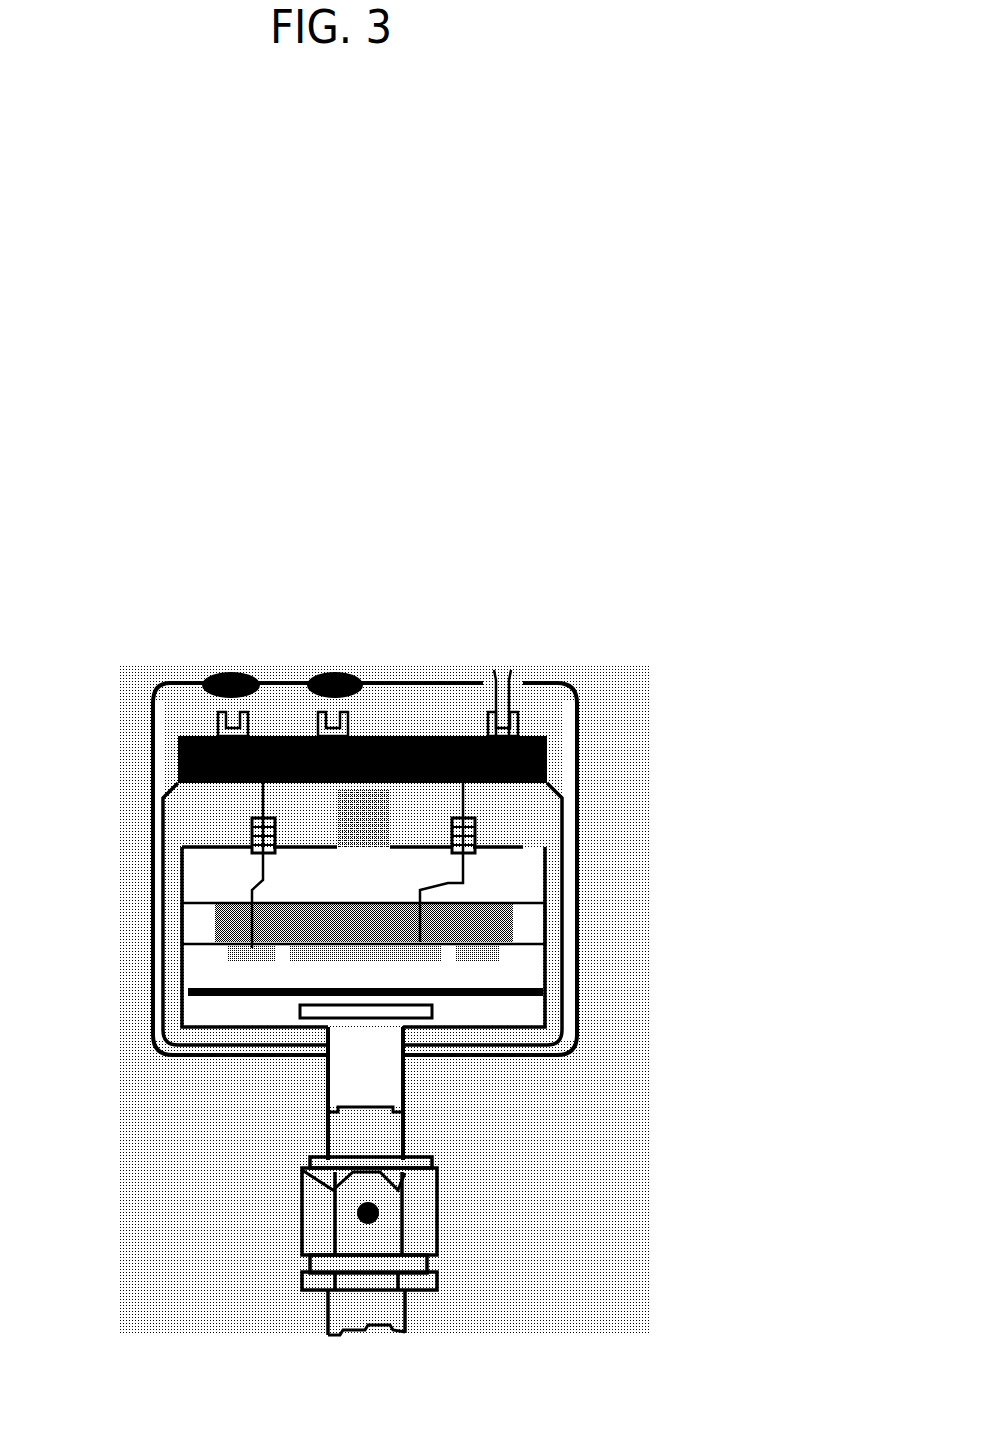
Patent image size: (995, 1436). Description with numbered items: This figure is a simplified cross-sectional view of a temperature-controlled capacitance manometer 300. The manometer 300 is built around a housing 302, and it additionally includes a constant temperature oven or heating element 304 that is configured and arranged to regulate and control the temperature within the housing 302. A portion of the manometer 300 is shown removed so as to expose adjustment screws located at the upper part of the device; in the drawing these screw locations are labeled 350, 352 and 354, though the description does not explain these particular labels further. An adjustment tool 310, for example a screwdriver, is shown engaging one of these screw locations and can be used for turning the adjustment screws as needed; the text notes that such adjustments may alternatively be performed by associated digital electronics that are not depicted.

The temperature-controlled capacitance manometer 300 is at (660, 294).
The housing 302 is at (575, 1037).
The constant temperature oven or heating element 304 is at (453, 905).
The adjustment tool 310 is at (507, 675).
The terminal clip 350 is at (213, 720).
The terminal block 352 is at (548, 720).
The terminal clip 354 is at (352, 727).